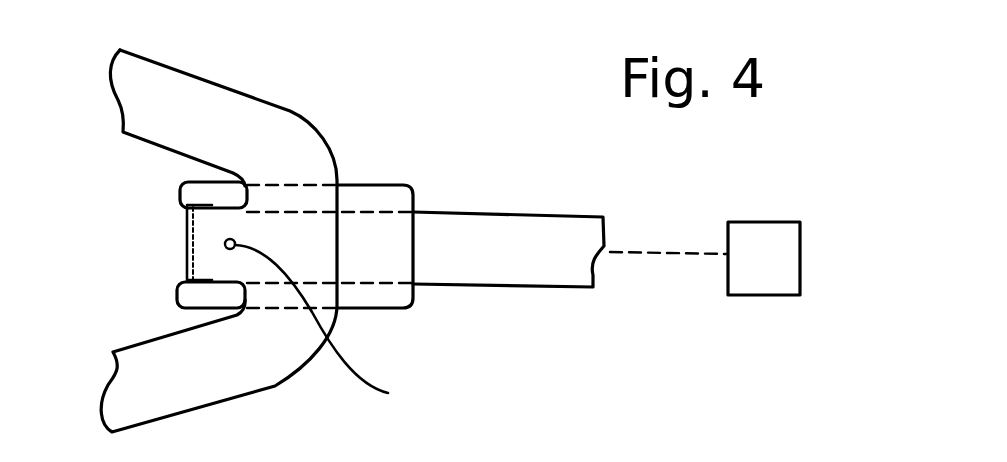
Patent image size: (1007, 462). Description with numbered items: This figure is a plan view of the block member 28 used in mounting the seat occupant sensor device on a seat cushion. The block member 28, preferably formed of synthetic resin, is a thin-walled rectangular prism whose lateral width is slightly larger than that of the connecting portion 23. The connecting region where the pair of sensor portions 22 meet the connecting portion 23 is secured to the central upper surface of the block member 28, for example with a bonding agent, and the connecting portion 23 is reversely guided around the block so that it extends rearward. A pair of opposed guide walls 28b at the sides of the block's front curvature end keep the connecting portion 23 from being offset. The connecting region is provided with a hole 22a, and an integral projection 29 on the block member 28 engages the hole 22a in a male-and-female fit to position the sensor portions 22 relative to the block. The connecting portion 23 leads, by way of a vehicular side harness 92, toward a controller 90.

The sensor portions 22 is at (205, 105).
The hole 22a is at (349, 329).
The connecting portion 23 is at (532, 225).
The block member 28 is at (378, 185).
The guide walls 28b is at (183, 209).
The projection 29 is at (224, 244).
The controller 90 is at (800, 256).
The vehicular side harness 92 is at (668, 251).